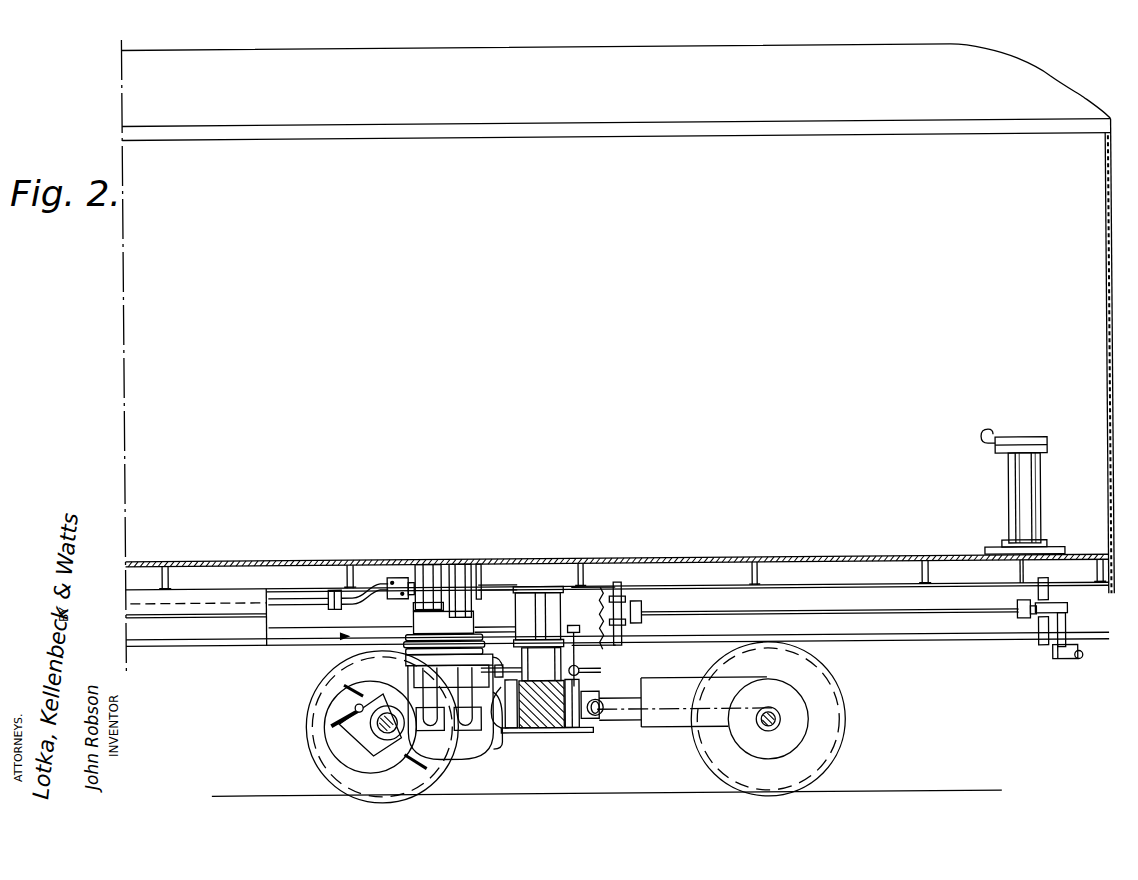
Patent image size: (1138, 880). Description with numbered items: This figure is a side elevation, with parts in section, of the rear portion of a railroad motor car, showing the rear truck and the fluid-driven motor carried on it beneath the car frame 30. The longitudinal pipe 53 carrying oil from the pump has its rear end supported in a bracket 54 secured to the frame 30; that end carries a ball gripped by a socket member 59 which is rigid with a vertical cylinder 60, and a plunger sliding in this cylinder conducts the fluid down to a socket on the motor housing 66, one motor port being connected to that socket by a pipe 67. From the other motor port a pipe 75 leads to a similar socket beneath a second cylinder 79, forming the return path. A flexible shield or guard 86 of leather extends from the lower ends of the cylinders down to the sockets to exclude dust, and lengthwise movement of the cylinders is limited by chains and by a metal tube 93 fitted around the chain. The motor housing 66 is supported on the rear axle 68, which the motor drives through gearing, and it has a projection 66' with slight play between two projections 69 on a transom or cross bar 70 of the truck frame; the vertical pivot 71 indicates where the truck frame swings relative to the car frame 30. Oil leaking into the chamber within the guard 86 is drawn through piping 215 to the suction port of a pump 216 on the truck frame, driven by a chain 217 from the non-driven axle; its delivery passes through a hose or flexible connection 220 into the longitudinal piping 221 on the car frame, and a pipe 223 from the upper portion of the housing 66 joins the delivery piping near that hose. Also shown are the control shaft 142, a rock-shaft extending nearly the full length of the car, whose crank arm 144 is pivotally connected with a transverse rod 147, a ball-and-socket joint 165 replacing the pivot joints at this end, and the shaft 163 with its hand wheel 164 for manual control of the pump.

The car frame 30 is at (290, 640).
The longitudinal pipe 53 is at (300, 601).
The bracket 54 is at (393, 579).
The socket member 59 is at (421, 565).
The vertical cylinder 60 is at (430, 604).
The cylinder 79 is at (462, 576).
The flexible shield or guard 86 is at (413, 632).
The metal tube 93 is at (502, 587).
The longitudinal piping 221 is at (505, 622).
The vertical pivot 71 is at (543, 622).
The pipe 223 is at (521, 665).
The hose or flexible connection 220 is at (598, 676).
The chain 217 is at (703, 705).
The pump 216 is at (597, 719).
The piping 215 is at (577, 736).
The projections 69 is at (543, 732).
The transom or cross bar 70 is at (558, 734).
The motor housing 66 is at (454, 719).
The projection 66' is at (506, 723).
The pipe 67 is at (432, 727).
The pipe 75 is at (467, 705).
The axle 68 is at (377, 732).
The control shaft 142 is at (183, 620).
The hand wheel 164 is at (980, 441).
The shaft 163 is at (1019, 575).
The crank arm 144 is at (1067, 629).
The rod 147 is at (1078, 666).
The ball-and-socket joint 165 is at (1068, 668).